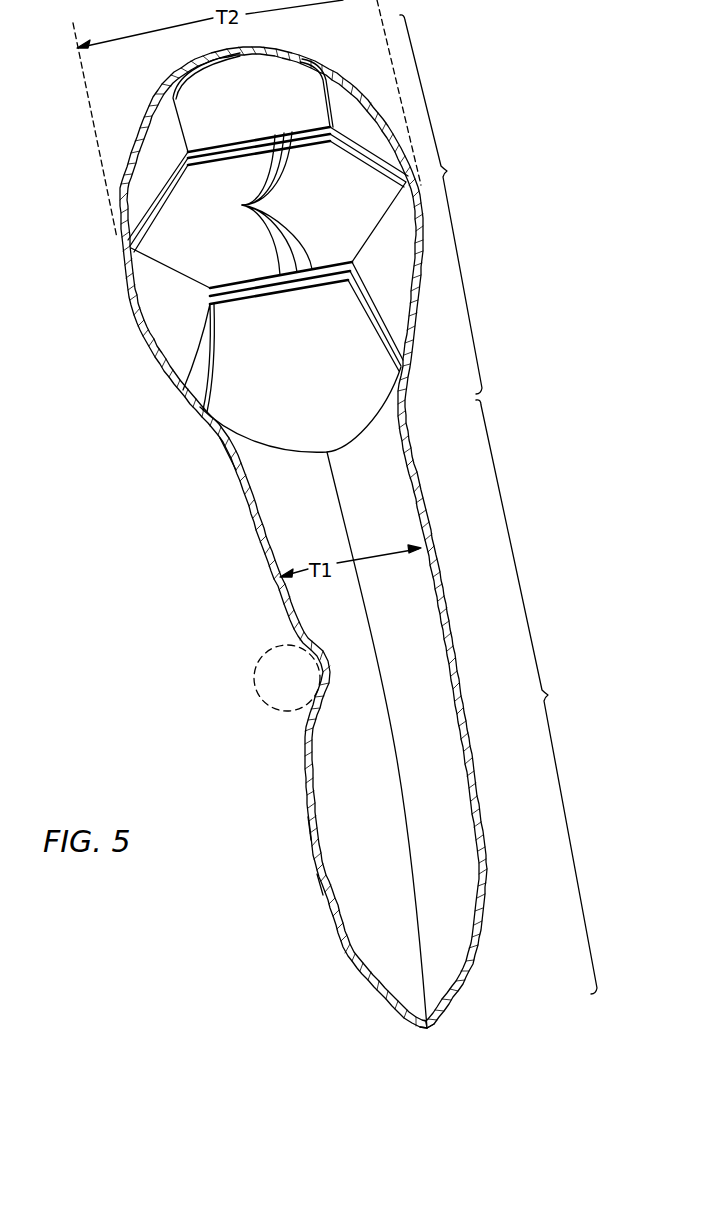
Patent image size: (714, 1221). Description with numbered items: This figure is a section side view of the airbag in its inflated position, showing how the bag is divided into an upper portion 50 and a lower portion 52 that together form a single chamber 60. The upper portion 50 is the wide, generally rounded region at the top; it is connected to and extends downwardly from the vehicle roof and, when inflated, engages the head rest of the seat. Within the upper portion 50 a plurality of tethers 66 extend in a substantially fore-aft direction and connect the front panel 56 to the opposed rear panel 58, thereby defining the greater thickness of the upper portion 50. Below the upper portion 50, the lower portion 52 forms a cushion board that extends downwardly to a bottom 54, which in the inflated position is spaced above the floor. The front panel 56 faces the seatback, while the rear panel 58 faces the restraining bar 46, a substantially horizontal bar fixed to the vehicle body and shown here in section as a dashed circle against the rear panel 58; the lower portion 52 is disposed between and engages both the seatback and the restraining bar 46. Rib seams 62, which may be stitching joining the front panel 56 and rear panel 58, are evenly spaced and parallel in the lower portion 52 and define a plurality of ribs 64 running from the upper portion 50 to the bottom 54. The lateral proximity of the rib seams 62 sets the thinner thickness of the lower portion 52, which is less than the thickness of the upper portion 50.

The restraining bar 46 is at (256, 662).
The upper portion 50 is at (305, 233).
The lower portion 52 is at (536, 697).
The bottom 54 is at (428, 1028).
The front panel 56 is at (480, 818).
The rear panel 58 is at (314, 845).
The single chamber 60 is at (243, 478).
The rib seams 62 is at (348, 528).
The ribs 64 is at (320, 900).
The tethers 66 is at (242, 205).